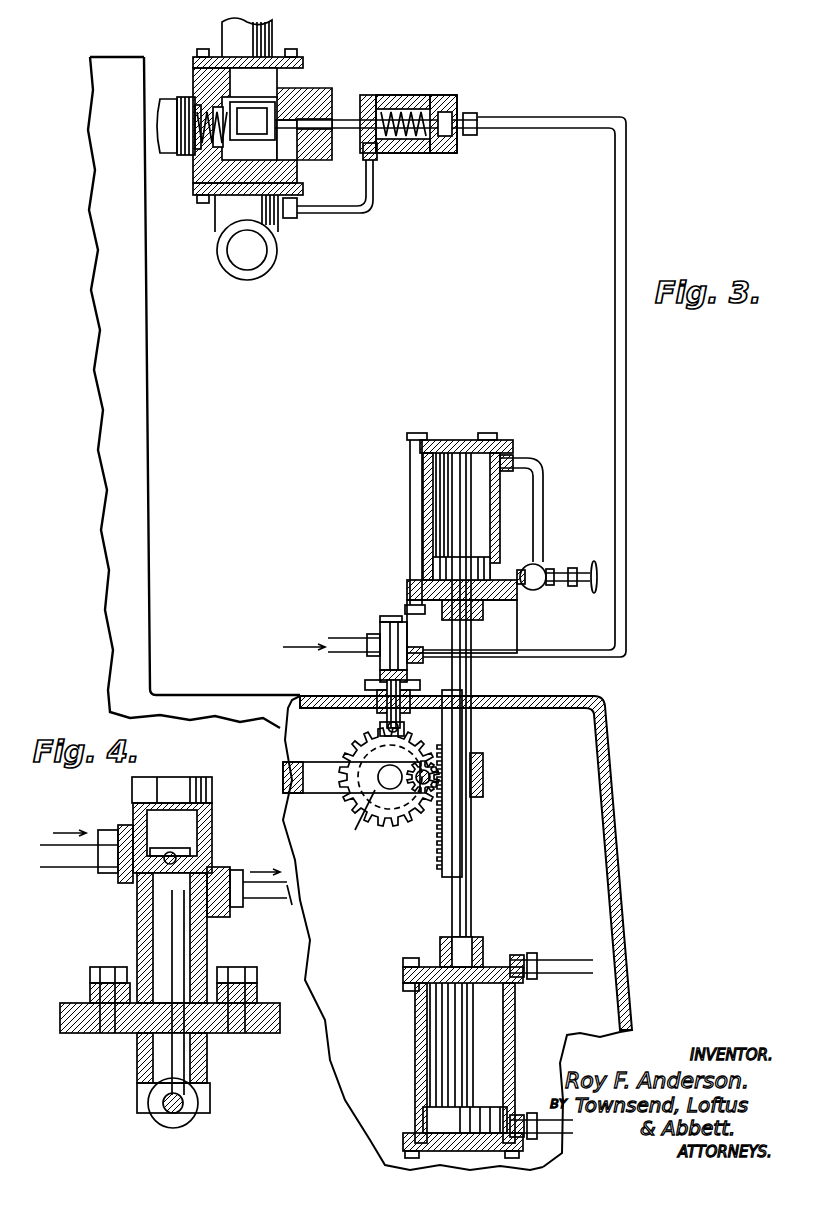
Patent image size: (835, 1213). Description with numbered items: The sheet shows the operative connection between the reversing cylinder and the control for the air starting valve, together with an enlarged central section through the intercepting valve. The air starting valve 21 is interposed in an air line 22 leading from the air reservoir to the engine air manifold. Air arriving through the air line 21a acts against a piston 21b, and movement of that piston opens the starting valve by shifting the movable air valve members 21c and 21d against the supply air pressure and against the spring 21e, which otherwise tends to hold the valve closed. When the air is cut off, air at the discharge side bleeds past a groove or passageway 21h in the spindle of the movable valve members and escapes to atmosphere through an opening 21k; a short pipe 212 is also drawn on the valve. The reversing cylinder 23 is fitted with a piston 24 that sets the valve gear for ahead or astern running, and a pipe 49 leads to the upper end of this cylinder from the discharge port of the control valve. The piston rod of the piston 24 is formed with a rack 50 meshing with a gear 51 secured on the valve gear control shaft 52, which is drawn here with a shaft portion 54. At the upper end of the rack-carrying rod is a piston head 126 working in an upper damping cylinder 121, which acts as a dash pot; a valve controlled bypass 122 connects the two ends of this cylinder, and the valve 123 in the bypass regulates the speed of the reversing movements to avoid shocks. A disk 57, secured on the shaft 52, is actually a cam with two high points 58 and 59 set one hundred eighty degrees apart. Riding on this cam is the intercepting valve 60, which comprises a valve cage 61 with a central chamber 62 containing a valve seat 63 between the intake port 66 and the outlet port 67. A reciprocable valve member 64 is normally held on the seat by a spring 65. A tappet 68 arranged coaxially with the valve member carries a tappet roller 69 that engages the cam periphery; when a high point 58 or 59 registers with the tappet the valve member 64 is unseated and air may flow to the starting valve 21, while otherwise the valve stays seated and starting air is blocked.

In FIG. 3, the air starting valve 21 is at (303, 90).
In FIG. 3, the air line 21a is at (628, 392).
In FIG. 4, the air line 21a is at (297, 909).
In FIG. 3, the piston 21b is at (446, 153).
In FIG. 3, the movable air valve member 21c is at (276, 118).
In FIG. 3, the movable air valve member 21d is at (193, 150).
In FIG. 3, the spring 21e is at (198, 122).
In FIG. 3, the groove or passageway 21h is at (362, 152).
In FIG. 3, the opening 21k is at (369, 97).
In FIG. 3, the air line 22 is at (273, 31).
In FIG. 3, the pipe 212 is at (328, 214).
In FIG. 3, the upper cylinder 121 is at (425, 485).
In FIG. 3, the valve controlled bypass 122 is at (543, 504).
In FIG. 3, the valve 123 is at (546, 568).
In FIG. 3, the piston head 126 is at (432, 555).
In FIG. 3, the intercepting valve 60 is at (384, 626).
In FIG. 4, the intercepting valve 60 is at (126, 942).
In FIG. 3, the tappet 68 is at (400, 700).
In FIG. 4, the tappet 68 is at (185, 1051).
In FIG. 3, the tappet roller 69 is at (388, 720).
In FIG. 4, the tappet roller 69 is at (188, 1119).
In FIG. 3, the high point 58 is at (380, 728).
In FIG. 3, the disk (cam) 57 is at (369, 750).
In FIG. 3, the gear 51 is at (428, 752).
In FIG. 3, the valve gear control shaft 52 is at (383, 800).
In FIG. 3, the shaft 54 is at (300, 795).
In FIG. 3, the high point 59 is at (372, 800).
In FIG. 3, the rack 50 is at (463, 836).
In FIG. 3, the pipe 49 is at (570, 965).
In FIG. 3, the reversing cylinder 23 is at (515, 1040).
In FIG. 3, the piston 24 is at (490, 1108).
In FIG. 4, the valve cage 61 is at (212, 837).
In FIG. 4, the central chamber 62 is at (205, 936).
In FIG. 4, the valve seat 63 is at (192, 857).
In FIG. 4, the reciprocable valve member 64 is at (164, 862).
In FIG. 4, the spring 65 is at (192, 812).
In FIG. 4, the intake port 66 is at (133, 840).
In FIG. 4, the outlet port 67 is at (228, 892).